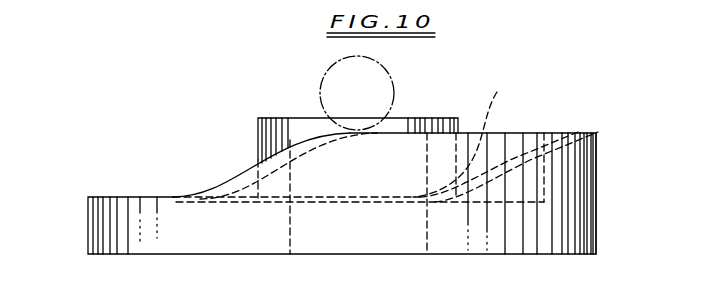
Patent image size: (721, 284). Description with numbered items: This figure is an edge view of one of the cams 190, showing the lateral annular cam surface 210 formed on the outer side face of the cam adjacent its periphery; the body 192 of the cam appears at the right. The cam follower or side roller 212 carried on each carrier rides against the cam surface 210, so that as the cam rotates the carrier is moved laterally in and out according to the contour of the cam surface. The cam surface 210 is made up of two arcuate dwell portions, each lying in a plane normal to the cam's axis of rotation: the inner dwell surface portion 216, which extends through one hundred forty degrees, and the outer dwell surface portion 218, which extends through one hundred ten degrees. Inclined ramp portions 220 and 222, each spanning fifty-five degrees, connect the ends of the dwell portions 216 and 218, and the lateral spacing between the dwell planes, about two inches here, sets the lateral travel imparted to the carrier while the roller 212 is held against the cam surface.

The cam 190 is at (85, 229).
The cylindrical body 192 is at (598, 216).
The lateral annular cam surface 210 is at (110, 197).
The cam follower or side roller 212 is at (380, 91).
The inner dwell surface portion 216 is at (153, 197).
The outer dwell surface portion 218 is at (515, 133).
The inclined ramp portion 220 is at (236, 178).
The inclined ramp portion 222 is at (471, 134).